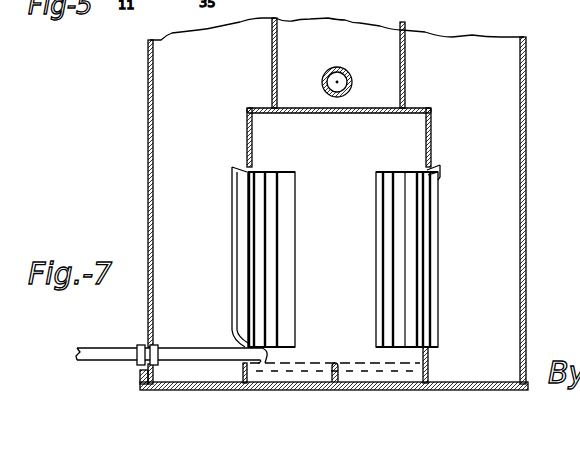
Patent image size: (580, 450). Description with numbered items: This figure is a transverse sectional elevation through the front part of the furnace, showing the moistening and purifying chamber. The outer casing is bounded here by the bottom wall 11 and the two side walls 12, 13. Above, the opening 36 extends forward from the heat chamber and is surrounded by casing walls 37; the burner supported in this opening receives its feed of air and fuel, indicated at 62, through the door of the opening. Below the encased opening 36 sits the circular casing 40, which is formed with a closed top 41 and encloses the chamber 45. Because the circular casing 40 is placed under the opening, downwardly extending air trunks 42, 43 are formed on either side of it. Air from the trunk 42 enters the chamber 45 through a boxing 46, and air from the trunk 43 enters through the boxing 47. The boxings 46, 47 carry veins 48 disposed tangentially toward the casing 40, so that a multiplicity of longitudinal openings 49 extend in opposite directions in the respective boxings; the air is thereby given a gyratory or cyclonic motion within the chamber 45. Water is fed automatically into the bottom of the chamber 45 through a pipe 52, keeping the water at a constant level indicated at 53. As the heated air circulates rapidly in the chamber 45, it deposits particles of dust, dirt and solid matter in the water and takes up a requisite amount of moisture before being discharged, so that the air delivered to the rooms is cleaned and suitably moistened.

The bottom wall 11 is at (468, 390).
The side wall 12 is at (148, 162).
The side wall 13 is at (526, 216).
The opening 36 is at (346, 33).
The casing walls 37 is at (278, 47).
The circular casing 40 is at (431, 137).
The closed top 41 is at (431, 108).
The air trunk 42 is at (490, 180).
The air trunk 43 is at (190, 212).
The chamber 45 is at (284, 136).
The boxing 46 is at (433, 345).
The boxing 47 is at (232, 327).
The veins 48 is at (236, 270).
The longitudinal openings 49 is at (258, 250).
The pipe 52 is at (193, 355).
The water level 53 is at (304, 365).
The feed of air and fuel 62 is at (352, 85).